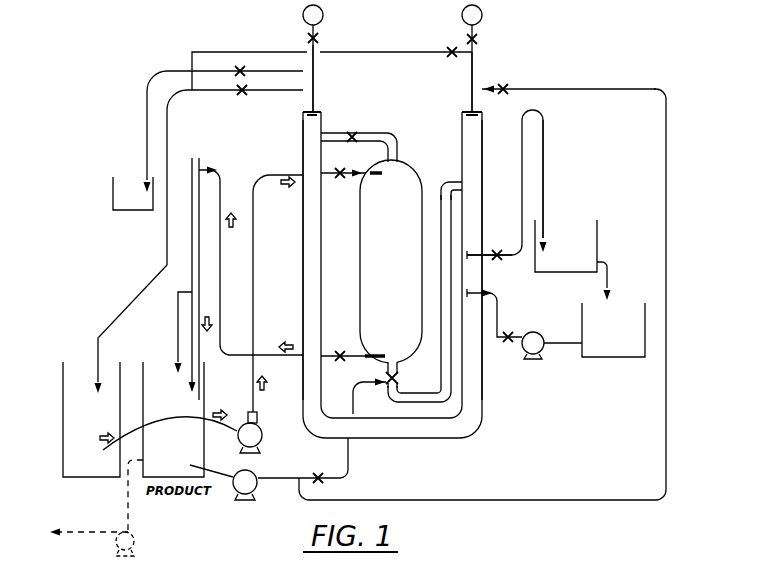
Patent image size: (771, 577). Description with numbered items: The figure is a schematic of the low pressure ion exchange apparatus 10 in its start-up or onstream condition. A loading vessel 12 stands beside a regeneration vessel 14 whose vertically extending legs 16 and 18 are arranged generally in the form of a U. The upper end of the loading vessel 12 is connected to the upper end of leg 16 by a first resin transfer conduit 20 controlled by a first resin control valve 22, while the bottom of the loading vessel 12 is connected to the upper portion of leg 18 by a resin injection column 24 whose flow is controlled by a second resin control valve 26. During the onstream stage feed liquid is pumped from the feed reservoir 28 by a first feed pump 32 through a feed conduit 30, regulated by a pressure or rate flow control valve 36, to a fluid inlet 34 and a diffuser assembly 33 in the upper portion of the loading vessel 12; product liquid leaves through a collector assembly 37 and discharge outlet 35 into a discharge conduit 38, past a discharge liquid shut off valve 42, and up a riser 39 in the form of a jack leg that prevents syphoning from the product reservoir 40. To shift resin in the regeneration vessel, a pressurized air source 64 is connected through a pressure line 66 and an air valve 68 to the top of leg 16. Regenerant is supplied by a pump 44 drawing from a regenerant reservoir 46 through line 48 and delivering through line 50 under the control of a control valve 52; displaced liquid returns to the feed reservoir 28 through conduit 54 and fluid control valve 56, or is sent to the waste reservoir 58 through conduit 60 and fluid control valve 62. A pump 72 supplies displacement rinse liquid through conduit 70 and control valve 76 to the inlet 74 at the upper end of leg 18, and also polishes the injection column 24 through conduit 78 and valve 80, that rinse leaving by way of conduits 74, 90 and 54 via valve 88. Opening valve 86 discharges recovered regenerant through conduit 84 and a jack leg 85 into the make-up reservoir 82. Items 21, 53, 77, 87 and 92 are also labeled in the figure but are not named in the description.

The low pressure ion exchange apparatus 10 is at (178, 30).
The loading vessel 12 is at (355, 258).
The regeneration vessel 14 is at (447, 444).
The leg 16 is at (302, 220).
The leg 18 is at (485, 128).
The first resin transfer conduit 20 is at (392, 133).
The top cap of left leg 21 is at (318, 110).
The first resin control valve 22 is at (352, 127).
The resin injection column 24 is at (442, 182).
The second resin control valve 26 is at (400, 378).
The feed reservoir 28 is at (63, 437).
The feed conduit 30 is at (254, 265).
The first feed pump 32 is at (263, 437).
The diffuser assembly 33 is at (372, 178).
The fluid inlet 34 is at (364, 168).
The discharge outlet 35 is at (365, 381).
The pressure or rate flow control valve 36 is at (342, 181).
The collector assembly 37 is at (377, 353).
The discharge conduit 38 is at (256, 384).
The riser 39 is at (190, 279).
The product reservoir 40 is at (204, 394).
The discharge liquid shut off valve 42 is at (340, 351).
The pump 44 is at (538, 360).
The regenerant reservoir 46 is at (637, 358).
The line 48 is at (560, 343).
The line 50 is at (505, 309).
The control valve 52 is at (508, 345).
The regenerant inlet 53 is at (470, 291).
The conduit 54 is at (169, 121).
The fluid control valve 56 is at (248, 95).
The waste reservoir 58 is at (113, 187).
The conduit 60 is at (150, 72).
The fluid control valve 62 is at (256, 64).
The pressurized air source 64 is at (323, 14).
The pressure line 66 is at (316, 68).
The air valve 68 is at (322, 38).
The conduit 70 is at (545, 499).
The pump 72 is at (248, 497).
The inlet 74 is at (475, 62).
The control valve 76 is at (516, 79).
The top cap of right leg 77 is at (464, 111).
The conduit 78 is at (352, 462).
The valve 80 is at (319, 472).
The make-up tank 82 is at (598, 237).
The conduit 84 is at (520, 183).
The jack leg 85 is at (543, 152).
The valve 86 is at (497, 250).
The make-up branch 87 is at (470, 258).
The valve 88 is at (450, 48).
The conduit 90 is at (243, 51).
The vent valve 92 is at (480, 38).